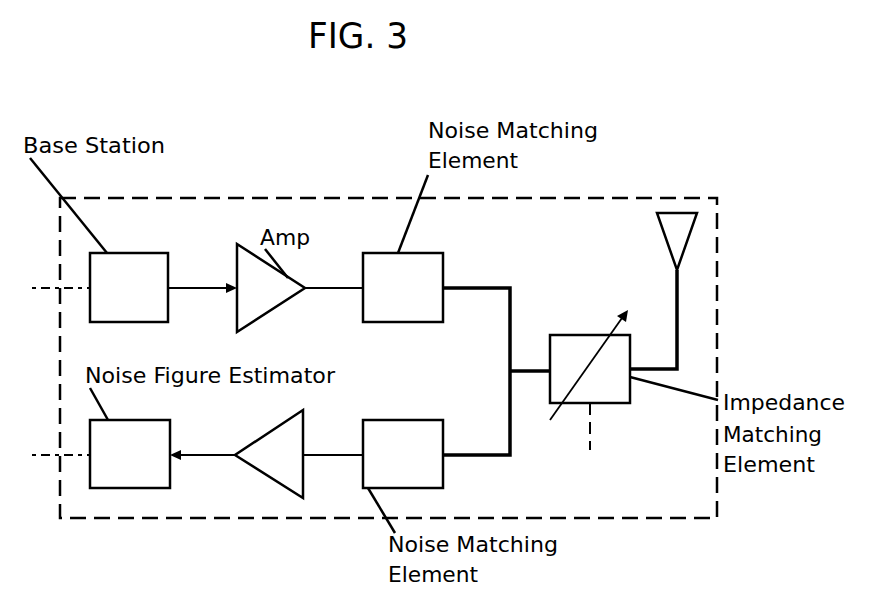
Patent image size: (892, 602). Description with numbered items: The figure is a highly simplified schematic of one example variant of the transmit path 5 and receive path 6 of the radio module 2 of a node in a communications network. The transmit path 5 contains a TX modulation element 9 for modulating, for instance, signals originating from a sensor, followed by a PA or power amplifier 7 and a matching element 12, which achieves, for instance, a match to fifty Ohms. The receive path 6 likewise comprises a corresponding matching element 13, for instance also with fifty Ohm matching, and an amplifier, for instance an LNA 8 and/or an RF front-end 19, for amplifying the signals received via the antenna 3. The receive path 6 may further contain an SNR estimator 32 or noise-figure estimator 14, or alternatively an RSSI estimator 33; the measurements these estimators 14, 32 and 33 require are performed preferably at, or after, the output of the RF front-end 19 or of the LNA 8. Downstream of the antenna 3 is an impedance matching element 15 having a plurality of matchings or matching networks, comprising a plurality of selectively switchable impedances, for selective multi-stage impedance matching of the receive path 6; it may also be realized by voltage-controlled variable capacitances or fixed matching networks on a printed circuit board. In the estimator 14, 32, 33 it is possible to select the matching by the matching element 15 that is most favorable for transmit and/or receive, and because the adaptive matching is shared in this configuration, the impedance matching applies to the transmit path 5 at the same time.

The radio module 2 is at (157, 233).
The antenna 3 is at (676, 215).
The transmit path 5 is at (327, 262).
The receive path 6 is at (331, 476).
The power amplifier 7 is at (271, 288).
The LNA 8 is at (250, 496).
The TX modulation element 9 is at (129, 287).
The matching element 12 is at (403, 287).
The matching element 13 is at (403, 454).
The noise-figure estimator 14 is at (114, 495).
The impedance matching element 15 is at (590, 380).
The RF front-end 19 is at (270, 465).
The SNR estimator 32 is at (114, 495).
The RSSI estimator 33 is at (123, 462).